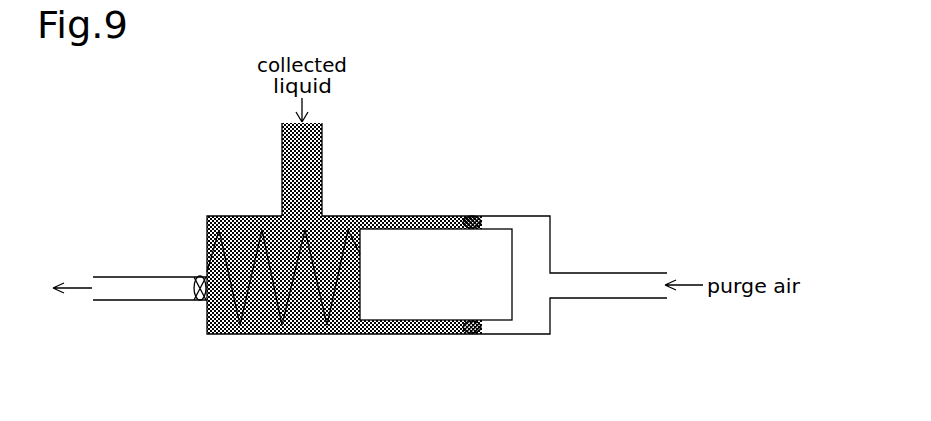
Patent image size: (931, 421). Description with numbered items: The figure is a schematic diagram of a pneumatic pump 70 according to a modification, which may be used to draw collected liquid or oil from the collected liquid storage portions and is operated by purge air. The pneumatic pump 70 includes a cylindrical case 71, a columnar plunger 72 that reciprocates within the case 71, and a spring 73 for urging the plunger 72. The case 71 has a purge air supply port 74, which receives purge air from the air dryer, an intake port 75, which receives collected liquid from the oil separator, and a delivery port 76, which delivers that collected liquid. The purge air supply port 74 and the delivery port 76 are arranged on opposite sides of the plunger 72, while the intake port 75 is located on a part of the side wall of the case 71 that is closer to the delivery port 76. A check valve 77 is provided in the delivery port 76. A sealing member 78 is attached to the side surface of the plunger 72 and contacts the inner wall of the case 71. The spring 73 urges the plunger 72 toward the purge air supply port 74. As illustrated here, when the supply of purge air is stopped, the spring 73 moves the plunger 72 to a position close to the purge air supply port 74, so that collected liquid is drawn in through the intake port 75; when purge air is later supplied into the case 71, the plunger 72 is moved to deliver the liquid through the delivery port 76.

The pneumatic pump 70 is at (603, 120).
The cylindrical case 71 is at (517, 216).
The columnar plunger 72 is at (430, 223).
The spring 73 is at (282, 326).
The purge air supply port 74 is at (558, 272).
The intake port 75 is at (322, 206).
The delivery port 76 is at (200, 277).
The check valve 77 is at (200, 300).
The sealing member 78 is at (478, 334).